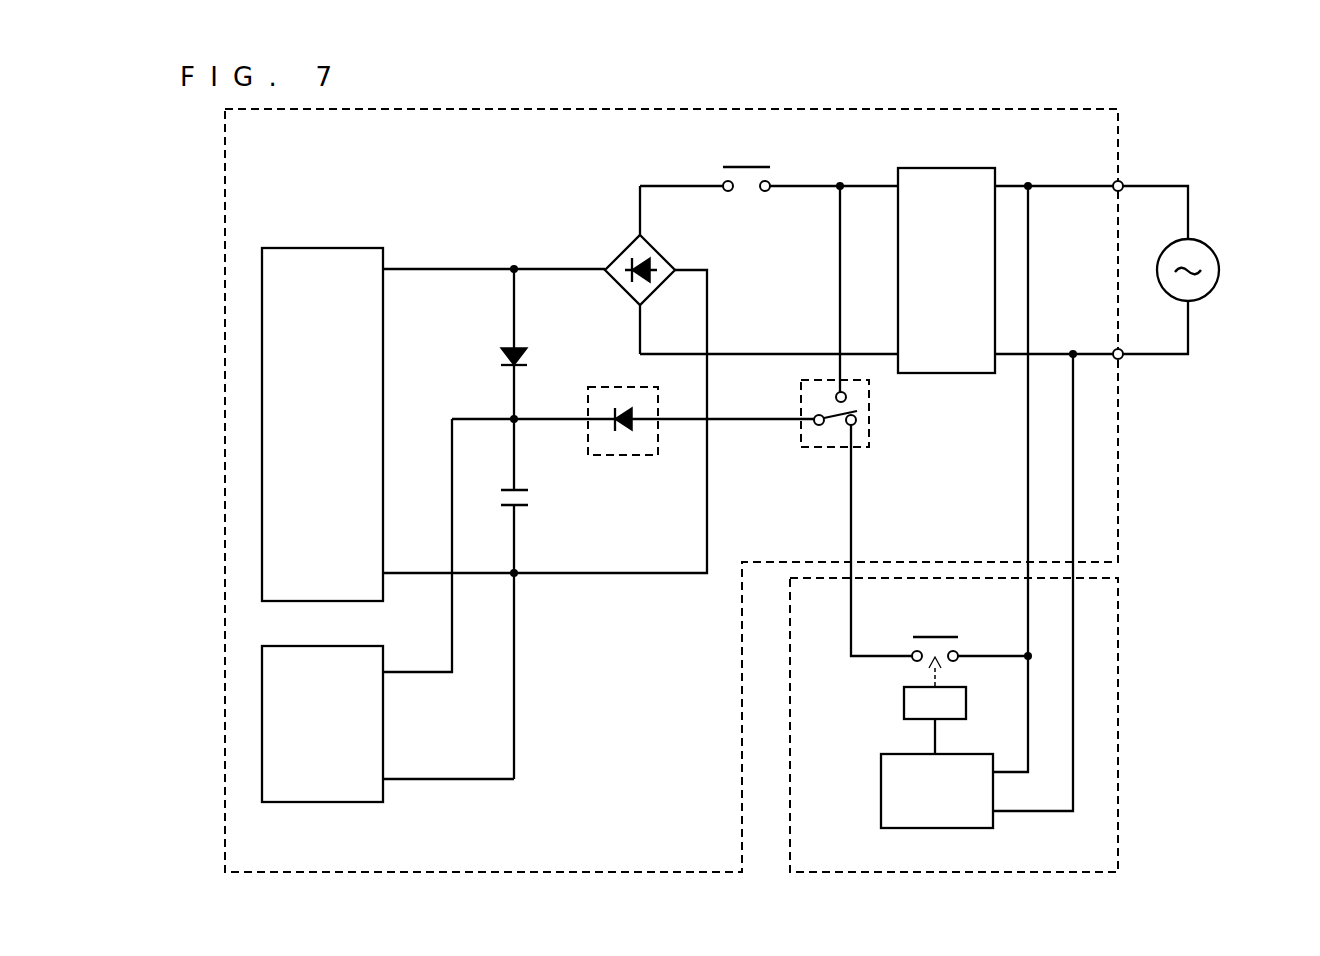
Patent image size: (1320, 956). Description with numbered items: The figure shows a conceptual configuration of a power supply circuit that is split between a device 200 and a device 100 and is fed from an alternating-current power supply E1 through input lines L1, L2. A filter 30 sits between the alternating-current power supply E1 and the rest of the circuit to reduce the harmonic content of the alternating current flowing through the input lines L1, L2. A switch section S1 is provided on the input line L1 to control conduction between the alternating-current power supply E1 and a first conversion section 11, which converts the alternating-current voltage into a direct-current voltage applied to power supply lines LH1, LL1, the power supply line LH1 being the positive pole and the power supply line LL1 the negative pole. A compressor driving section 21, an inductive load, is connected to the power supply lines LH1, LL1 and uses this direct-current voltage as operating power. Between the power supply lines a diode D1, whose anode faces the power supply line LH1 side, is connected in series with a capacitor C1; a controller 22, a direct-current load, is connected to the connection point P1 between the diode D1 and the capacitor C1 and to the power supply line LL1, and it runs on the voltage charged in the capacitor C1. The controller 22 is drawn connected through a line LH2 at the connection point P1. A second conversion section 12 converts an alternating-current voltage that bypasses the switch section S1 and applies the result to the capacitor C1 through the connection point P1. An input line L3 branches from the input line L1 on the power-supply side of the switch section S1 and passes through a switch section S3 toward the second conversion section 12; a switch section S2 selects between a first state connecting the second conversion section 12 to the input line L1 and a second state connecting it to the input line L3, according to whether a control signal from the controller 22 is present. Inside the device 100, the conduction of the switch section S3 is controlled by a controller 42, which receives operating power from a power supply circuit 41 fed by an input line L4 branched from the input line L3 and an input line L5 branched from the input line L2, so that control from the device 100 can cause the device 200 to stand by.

The compressor driving section 21 is at (355, 244).
The controller 22 is at (357, 645).
The first conversion section 11 is at (657, 248).
The second conversion section 12 is at (647, 458).
The filter 30 is at (976, 168).
The power supply circuit 41 is at (981, 761).
The controller 42 is at (966, 693).
The device 100 is at (1119, 691).
The device 200 is at (1119, 471).
The switch section S1 is at (755, 163).
The switch section S2 is at (822, 448).
The switch section S3 is at (942, 636).
The input line L1 is at (863, 182).
The input line L2 is at (864, 352).
The input line L3 is at (853, 522).
The input line L4 is at (1029, 725).
The input line L5 is at (1075, 452).
The power supply line LH1 is at (547, 268).
The second high-side line LH2 is at (545, 417).
The power supply line LL1 is at (610, 571).
The diode D1 is at (534, 358).
The capacitor C1 is at (533, 500).
The connection point P1 is at (511, 422).
The alternating-current power supply E1 is at (1206, 243).